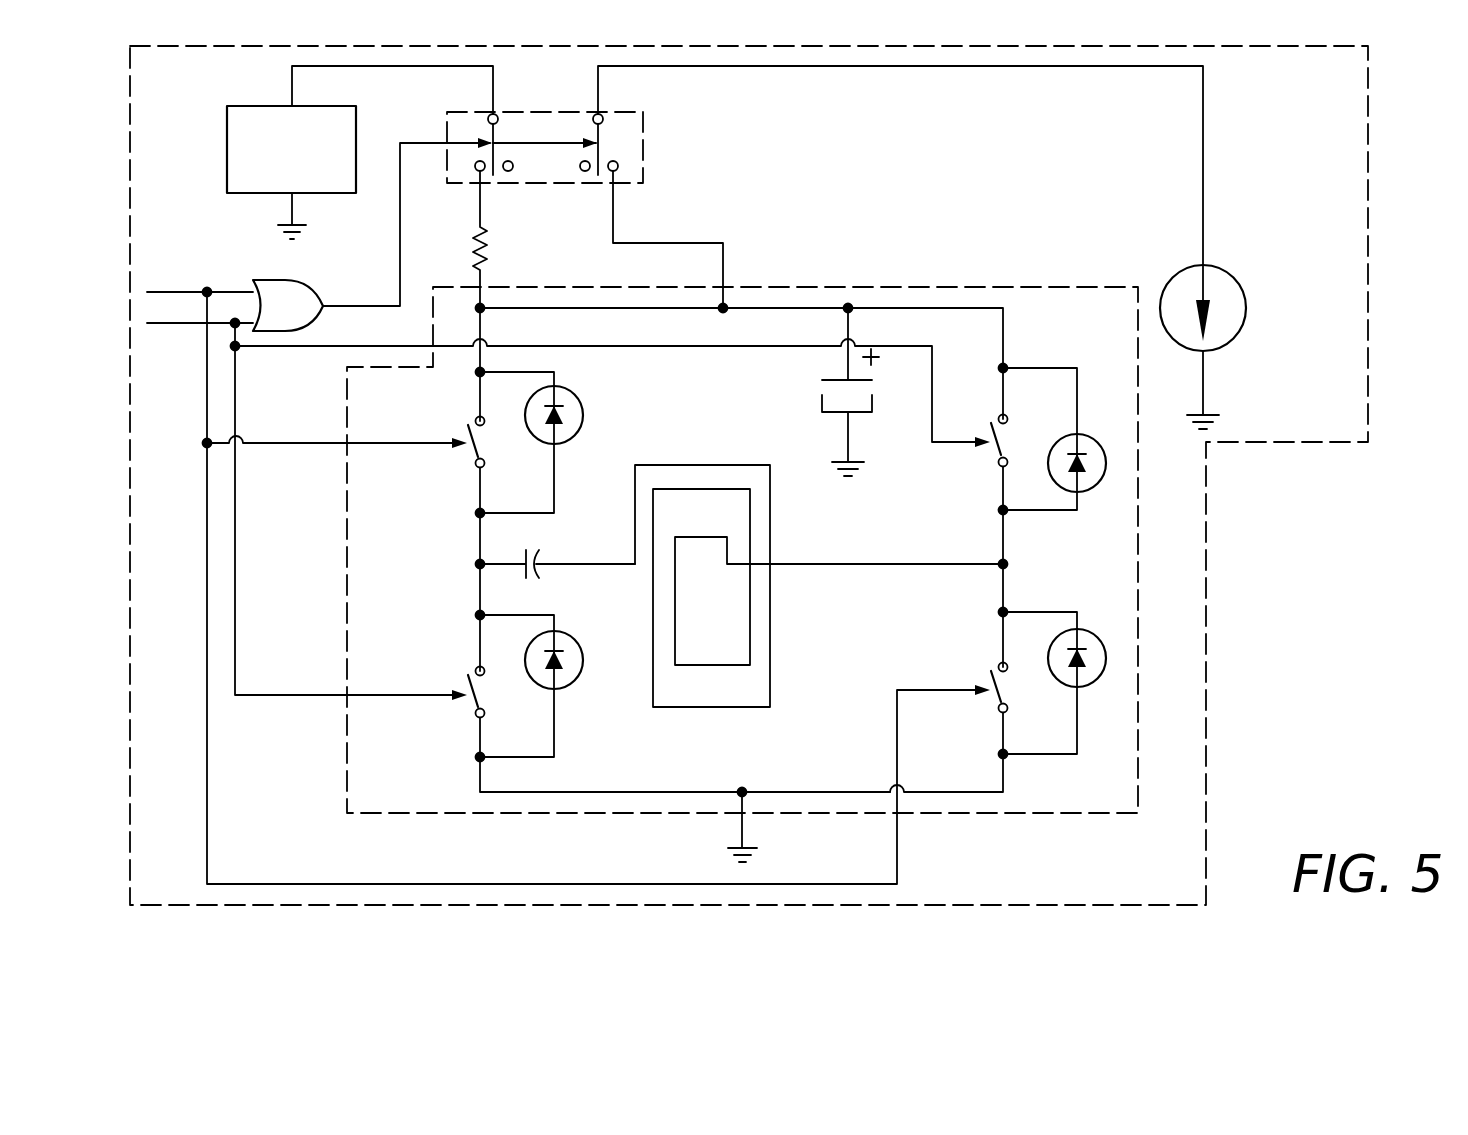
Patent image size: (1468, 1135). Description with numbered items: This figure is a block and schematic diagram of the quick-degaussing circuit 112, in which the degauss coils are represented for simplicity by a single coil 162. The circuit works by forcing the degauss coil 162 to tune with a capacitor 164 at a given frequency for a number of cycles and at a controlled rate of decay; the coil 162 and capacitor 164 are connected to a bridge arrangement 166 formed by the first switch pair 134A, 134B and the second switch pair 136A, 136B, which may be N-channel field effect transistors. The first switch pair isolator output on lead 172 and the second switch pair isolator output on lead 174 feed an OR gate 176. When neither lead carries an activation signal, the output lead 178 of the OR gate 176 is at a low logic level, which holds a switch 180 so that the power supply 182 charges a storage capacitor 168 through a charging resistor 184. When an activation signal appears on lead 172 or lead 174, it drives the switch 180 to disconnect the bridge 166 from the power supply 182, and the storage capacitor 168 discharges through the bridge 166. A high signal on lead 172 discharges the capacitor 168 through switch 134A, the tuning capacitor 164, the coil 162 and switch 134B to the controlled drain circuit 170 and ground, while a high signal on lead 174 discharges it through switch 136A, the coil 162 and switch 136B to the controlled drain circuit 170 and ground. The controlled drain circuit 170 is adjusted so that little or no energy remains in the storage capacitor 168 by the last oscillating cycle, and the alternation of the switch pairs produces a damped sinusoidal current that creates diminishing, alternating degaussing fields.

The quick-degaussing circuit 112 is at (1368, 172).
The power supply 182 is at (262, 106).
The switch 180 is at (643, 152).
The charging resistor 184 is at (487, 250).
The output lead 178 is at (400, 224).
The OR gate 176 is at (280, 280).
The lead 172 is at (185, 250).
The lead 174 is at (172, 325).
The bridge arrangement 166 is at (855, 286).
The controlled drain circuit 170 is at (1183, 270).
The storage capacitor 168 is at (832, 415).
The capacitor 164 is at (537, 548).
The coil 162 is at (770, 668).
The first switch pair switch 134A is at (468, 455).
The first switch pair switch 134B is at (990, 676).
The second switch pair switch 136A is at (995, 452).
The second switch pair switch 136B is at (470, 705).